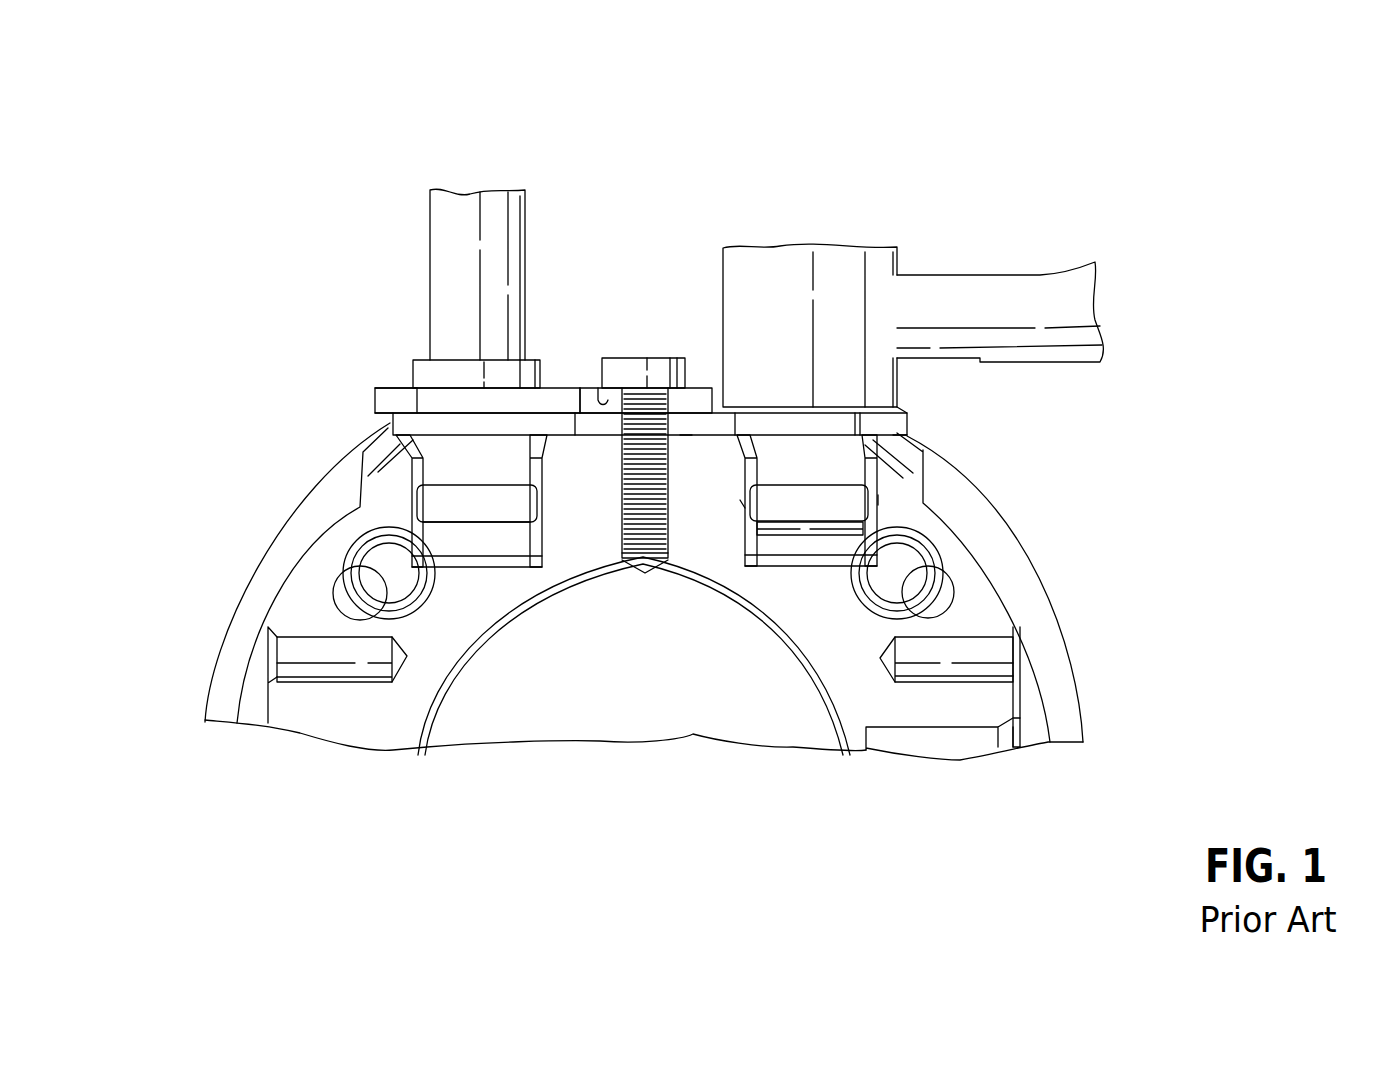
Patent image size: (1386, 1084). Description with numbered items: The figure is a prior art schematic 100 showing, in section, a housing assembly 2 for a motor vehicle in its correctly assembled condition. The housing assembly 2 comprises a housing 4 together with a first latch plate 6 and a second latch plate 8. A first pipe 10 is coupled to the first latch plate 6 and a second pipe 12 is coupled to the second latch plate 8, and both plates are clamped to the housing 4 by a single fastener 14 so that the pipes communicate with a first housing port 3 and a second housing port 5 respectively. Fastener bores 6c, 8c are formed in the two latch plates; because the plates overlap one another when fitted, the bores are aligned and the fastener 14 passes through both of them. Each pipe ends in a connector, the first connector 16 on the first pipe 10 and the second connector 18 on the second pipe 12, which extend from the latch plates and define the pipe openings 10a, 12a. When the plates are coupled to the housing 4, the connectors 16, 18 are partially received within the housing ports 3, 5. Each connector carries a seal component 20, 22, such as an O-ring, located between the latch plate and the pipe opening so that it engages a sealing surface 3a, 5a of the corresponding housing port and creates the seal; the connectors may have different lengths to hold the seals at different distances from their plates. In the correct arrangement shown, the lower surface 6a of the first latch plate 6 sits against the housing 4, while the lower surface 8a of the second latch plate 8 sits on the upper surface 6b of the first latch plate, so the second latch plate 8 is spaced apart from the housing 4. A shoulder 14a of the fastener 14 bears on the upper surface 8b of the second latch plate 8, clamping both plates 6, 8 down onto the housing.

The schematic 100 is at (1251, 125).
The housing assembly 2 is at (1096, 588).
The first housing port 3 is at (720, 513).
The sealing surface 3a is at (878, 500).
The housing 4 is at (1078, 692).
The second housing port 5 is at (549, 540).
The sealing surface 5a is at (543, 506).
The first latch plate 6 is at (893, 422).
The lower surface 6a is at (903, 436).
The upper surface 6b is at (833, 407).
The fastener bore 6c is at (686, 435).
The second latch plate 8 is at (390, 398).
The lower surface 8a is at (388, 424).
The upper surface 8b is at (392, 390).
The fastener bore 8c is at (586, 402).
The first pipe 10 is at (990, 293).
The opening 10a is at (828, 562).
The second pipe 12 is at (455, 236).
The opening 12a is at (497, 563).
The fastener 14 is at (633, 368).
The shoulder 14a is at (602, 407).
The first connector 16 is at (850, 563).
The second connector 18 is at (462, 540).
The seal component 20 is at (540, 493).
The seal component 22 is at (737, 507).